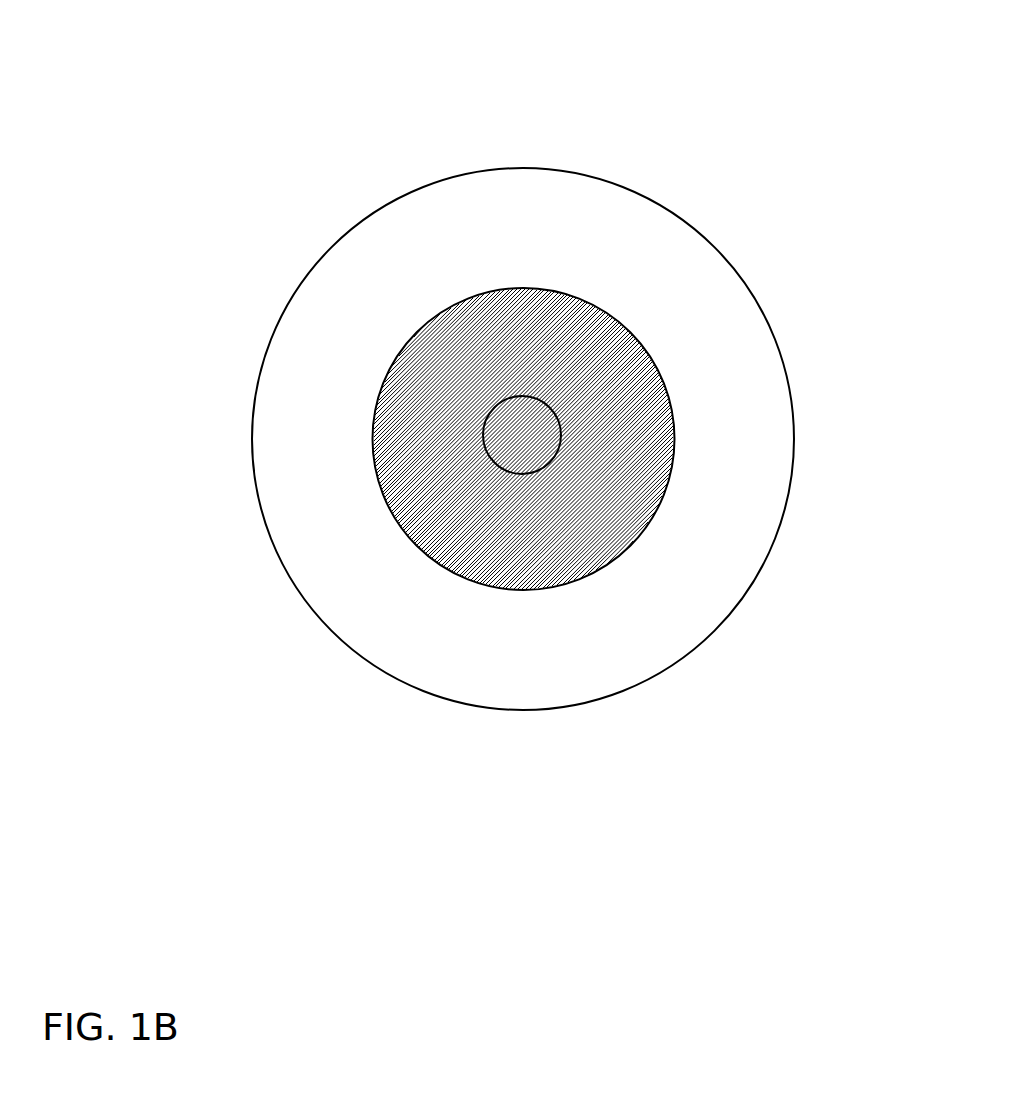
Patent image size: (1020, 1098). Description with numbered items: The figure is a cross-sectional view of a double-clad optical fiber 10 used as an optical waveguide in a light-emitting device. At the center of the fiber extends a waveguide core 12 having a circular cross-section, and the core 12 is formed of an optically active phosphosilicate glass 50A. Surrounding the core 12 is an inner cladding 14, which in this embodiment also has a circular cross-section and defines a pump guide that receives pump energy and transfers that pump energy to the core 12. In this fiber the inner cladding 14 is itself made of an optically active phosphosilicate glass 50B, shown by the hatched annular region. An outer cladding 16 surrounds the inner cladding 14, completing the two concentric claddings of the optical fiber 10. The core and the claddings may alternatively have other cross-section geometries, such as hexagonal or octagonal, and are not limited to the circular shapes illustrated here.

The optical fiber 10 is at (489, 383).
The waveguide core 12 is at (475, 438).
The inner cladding 14 is at (685, 444).
The outer cladding 16 is at (727, 532).
The optically active phosphosilicate glass 50A is at (537, 423).
The optically active phosphosilicate glass 50B is at (482, 535).